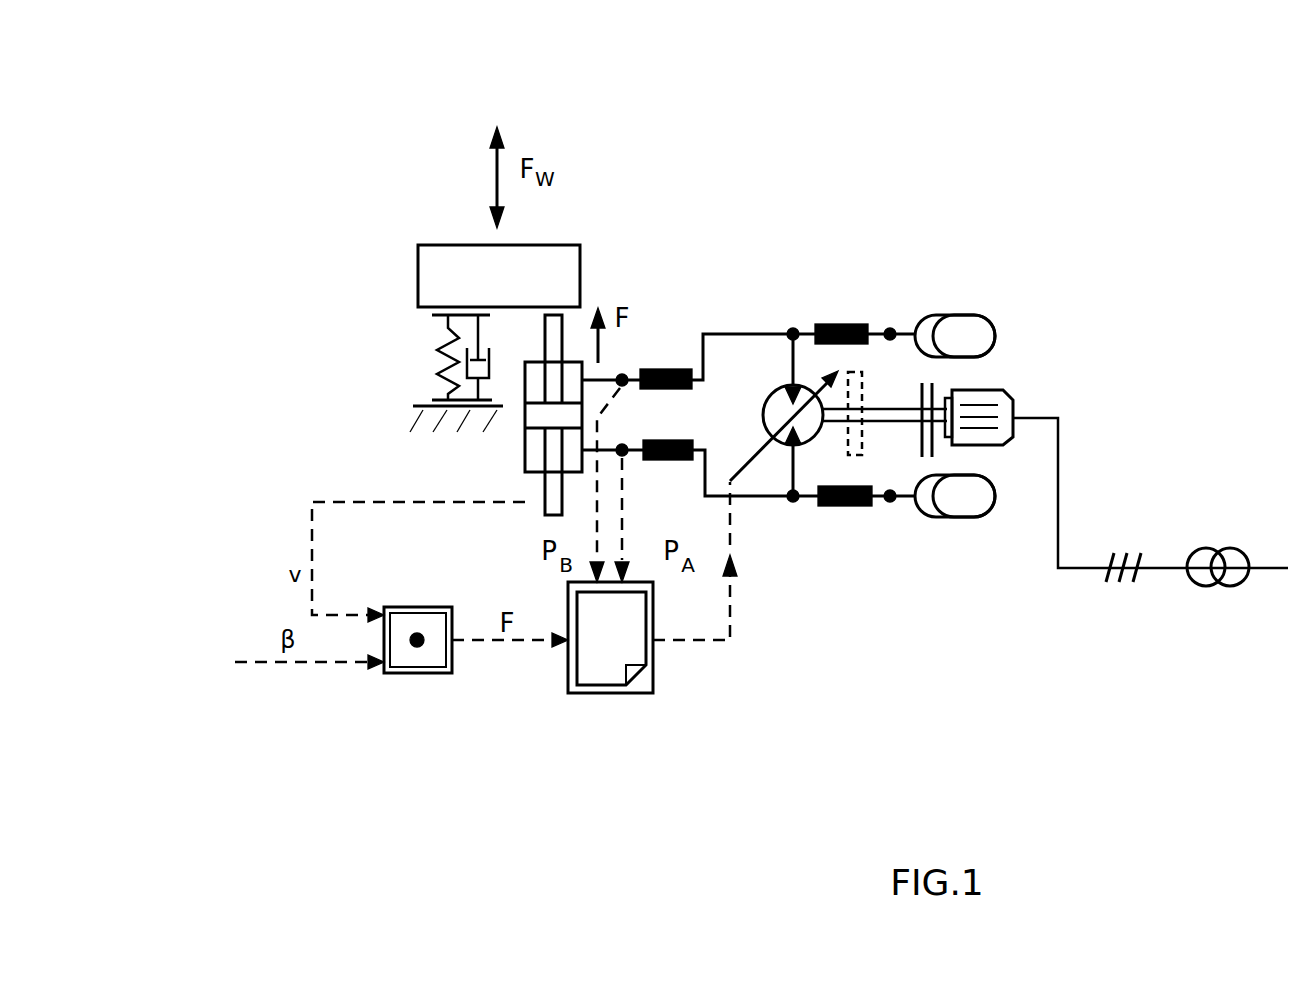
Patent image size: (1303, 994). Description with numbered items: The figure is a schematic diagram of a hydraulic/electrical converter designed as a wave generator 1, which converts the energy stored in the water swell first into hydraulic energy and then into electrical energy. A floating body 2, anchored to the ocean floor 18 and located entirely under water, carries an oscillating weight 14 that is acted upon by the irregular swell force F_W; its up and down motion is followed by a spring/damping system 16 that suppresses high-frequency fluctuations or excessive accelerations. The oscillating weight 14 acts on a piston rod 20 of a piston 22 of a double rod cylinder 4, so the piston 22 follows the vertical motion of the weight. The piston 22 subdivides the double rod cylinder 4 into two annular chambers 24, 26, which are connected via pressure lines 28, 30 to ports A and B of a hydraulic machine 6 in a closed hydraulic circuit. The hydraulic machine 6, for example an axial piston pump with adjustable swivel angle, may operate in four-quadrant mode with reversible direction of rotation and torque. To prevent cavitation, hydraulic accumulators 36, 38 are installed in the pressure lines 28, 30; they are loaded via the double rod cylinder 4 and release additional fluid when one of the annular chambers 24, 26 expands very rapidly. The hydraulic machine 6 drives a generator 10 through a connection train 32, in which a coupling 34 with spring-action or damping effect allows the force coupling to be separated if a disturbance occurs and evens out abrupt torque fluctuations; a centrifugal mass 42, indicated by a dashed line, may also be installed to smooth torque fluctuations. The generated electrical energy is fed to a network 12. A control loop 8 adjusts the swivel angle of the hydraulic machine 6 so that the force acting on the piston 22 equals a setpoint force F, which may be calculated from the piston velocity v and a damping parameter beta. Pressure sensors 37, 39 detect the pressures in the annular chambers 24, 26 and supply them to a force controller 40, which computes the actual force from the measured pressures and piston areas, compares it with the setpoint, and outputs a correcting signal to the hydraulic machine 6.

The wave generator 1 is at (335, 392).
The floating body 2 is at (376, 276).
The double rod cylinder 4 is at (379, 303).
The hydraulic machine 6 is at (777, 407).
The control loop 8 is at (689, 672).
The generator 10 is at (993, 398).
The network 12 is at (1085, 569).
The oscillating weight 14 is at (468, 292).
The spring/damping system 16 is at (440, 382).
The ocean floor 18 is at (440, 420).
The piston rod 20 is at (557, 332).
The piston 22 is at (540, 417).
The annular chamber 24 is at (540, 462).
The annular chamber 26 is at (687, 245).
The pressure line 28 is at (687, 284).
The pressure line 30 is at (768, 498).
The connection train 32 is at (882, 386).
The coupling 34 is at (932, 389).
The hydraulic accumulator 36 is at (953, 328).
The pressure sensor 37 is at (624, 386).
The hydraulic accumulator 38 is at (950, 506).
The pressure sensor 39 is at (624, 456).
The force controller 40 is at (596, 650).
The centrifugal mass 42 is at (856, 456).